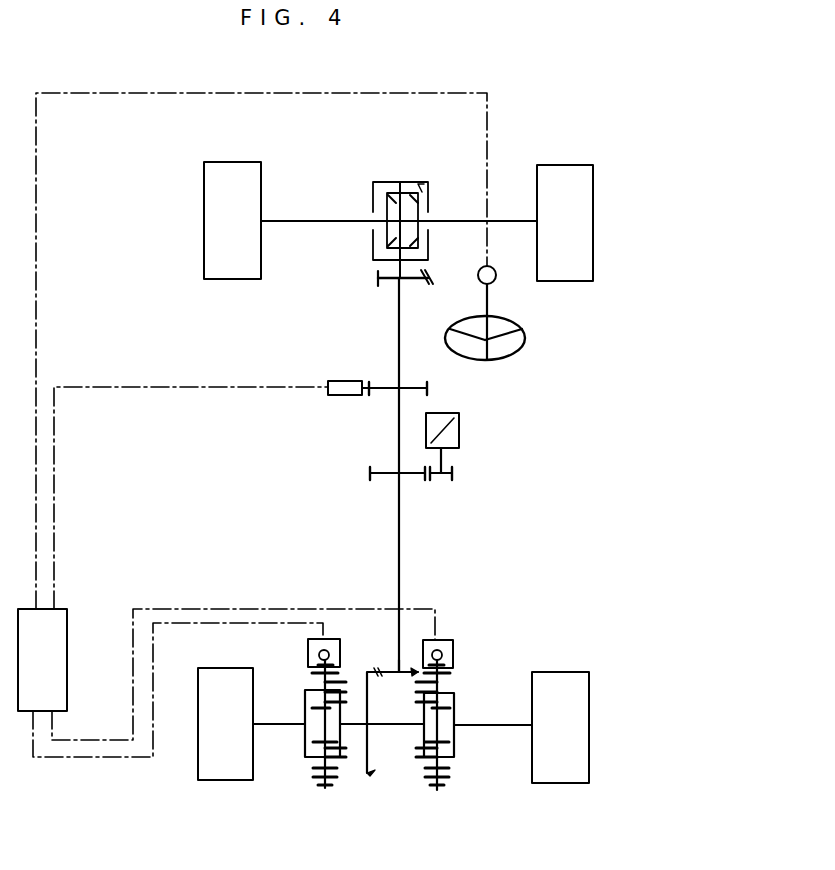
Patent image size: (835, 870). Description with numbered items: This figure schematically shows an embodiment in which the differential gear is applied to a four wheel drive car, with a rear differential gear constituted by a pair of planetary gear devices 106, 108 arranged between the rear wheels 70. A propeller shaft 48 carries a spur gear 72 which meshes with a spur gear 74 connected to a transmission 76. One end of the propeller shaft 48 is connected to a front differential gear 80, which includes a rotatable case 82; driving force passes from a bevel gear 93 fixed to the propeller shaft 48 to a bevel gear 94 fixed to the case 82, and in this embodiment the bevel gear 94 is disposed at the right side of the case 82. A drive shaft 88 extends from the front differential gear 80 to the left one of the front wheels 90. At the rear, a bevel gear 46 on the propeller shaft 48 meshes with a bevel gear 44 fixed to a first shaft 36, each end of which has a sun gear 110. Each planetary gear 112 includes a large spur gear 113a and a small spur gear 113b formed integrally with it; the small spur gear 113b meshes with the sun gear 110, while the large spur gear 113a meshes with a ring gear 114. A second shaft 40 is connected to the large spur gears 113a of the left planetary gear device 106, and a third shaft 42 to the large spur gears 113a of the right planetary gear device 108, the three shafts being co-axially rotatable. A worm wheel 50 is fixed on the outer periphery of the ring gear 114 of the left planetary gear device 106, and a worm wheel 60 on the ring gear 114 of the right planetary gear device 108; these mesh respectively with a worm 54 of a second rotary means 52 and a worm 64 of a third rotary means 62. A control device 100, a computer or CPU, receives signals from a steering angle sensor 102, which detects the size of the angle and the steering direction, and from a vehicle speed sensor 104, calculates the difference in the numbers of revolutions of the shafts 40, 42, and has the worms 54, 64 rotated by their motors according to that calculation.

The first shaft 36 is at (388, 728).
The second shaft 40 is at (280, 728).
The third shaft 42 is at (484, 729).
The bevel gear 44 is at (372, 777).
The bevel gear 46 is at (401, 660).
The propeller shaft 48 is at (402, 371).
The worm wheel 50 is at (324, 791).
The second rotary means 52 is at (339, 639).
The worm 54 is at (320, 647).
The worm wheel 60 is at (439, 793).
The third rotary means 62 is at (455, 642).
The worm 64 is at (440, 649).
The rear wheels 70 is at (209, 668).
The spur gear 72 is at (379, 470).
The spur gear 74 is at (478, 466).
The transmission 76 is at (459, 434).
The front differential gear 80 is at (420, 176).
The rotatable case 82 is at (388, 182).
The drive shaft 88 is at (318, 221).
The front wheels 90 is at (240, 162).
The bevel gear 93 is at (378, 286).
The bevel gear 94 is at (432, 267).
The control device 100 is at (66, 672).
The steering angle sensor 102 is at (497, 281).
The vehicle speed sensor 104 is at (343, 381).
The left planetary gear device 106 is at (302, 750).
The right planetary gear device 108 is at (458, 740).
The sun gear 110 is at (350, 702).
The planetary gear 112 is at (315, 686).
The large spur gear 113a is at (318, 674).
The small spur gear 113b is at (346, 688).
The ring gear 114 is at (334, 778).